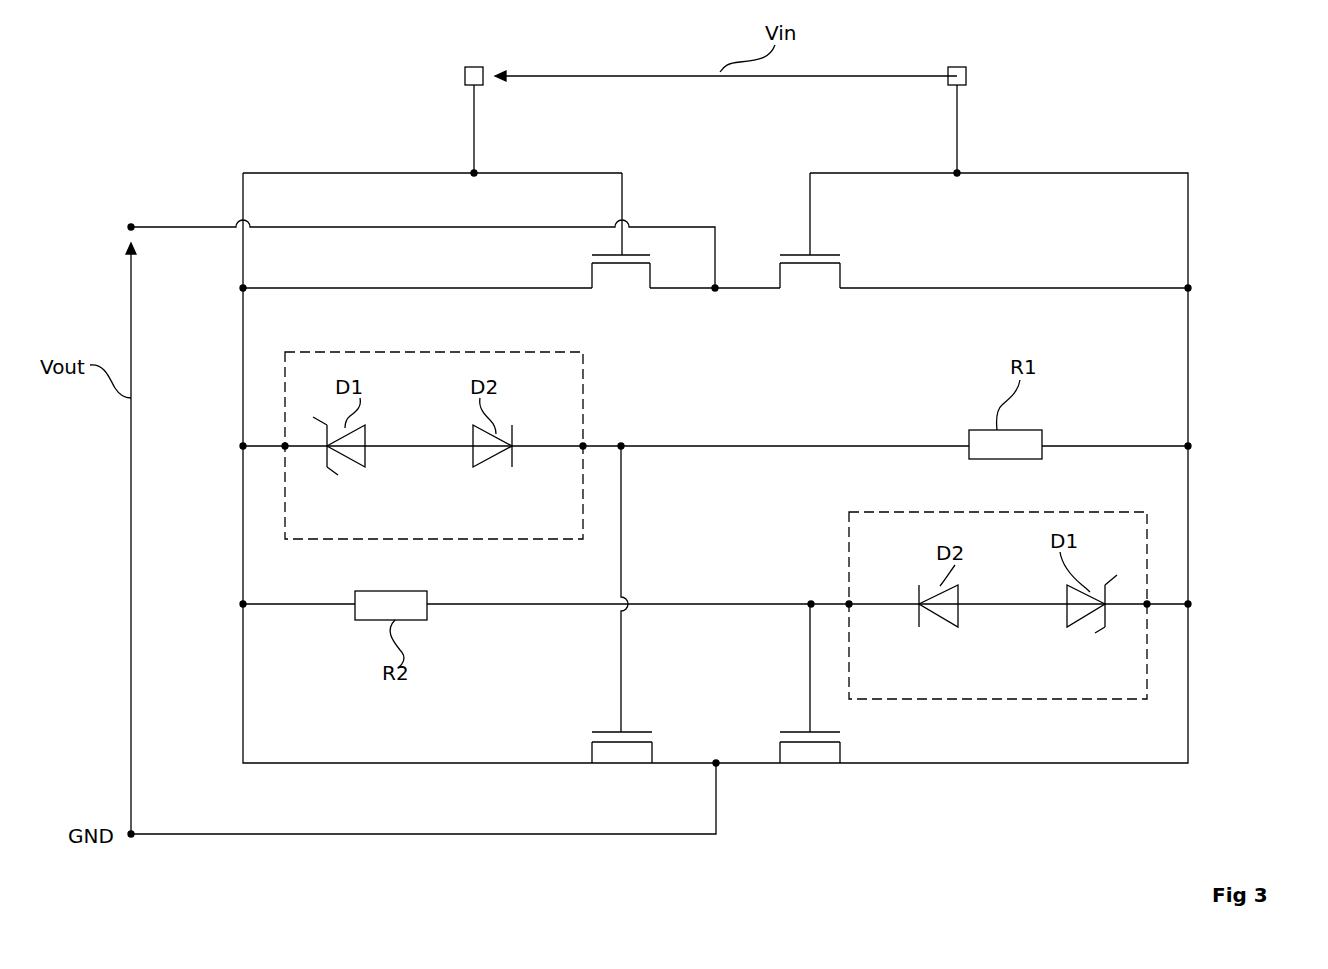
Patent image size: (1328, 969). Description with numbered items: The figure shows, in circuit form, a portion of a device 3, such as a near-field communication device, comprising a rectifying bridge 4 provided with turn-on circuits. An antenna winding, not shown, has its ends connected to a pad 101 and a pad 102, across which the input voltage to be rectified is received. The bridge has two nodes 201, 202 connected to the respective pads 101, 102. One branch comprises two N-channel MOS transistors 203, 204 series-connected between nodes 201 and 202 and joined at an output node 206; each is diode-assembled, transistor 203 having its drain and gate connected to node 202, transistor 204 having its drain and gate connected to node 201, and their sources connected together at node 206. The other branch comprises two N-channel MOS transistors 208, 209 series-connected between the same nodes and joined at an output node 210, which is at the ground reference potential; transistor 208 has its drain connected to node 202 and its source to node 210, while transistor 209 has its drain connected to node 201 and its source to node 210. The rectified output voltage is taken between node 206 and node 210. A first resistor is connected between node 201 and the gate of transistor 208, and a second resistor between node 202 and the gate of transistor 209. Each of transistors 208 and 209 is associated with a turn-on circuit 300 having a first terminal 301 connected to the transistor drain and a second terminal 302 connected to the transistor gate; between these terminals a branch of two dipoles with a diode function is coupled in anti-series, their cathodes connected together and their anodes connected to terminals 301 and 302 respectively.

The device 3 is at (1164, 68).
The rectifying bridge 4 is at (1213, 353).
The pad 101 is at (958, 67).
The pad 102 is at (472, 67).
The node 201 is at (960, 172).
The node 202 is at (476, 172).
The N-channel MOS transistor 203 is at (624, 282).
The N-channel MOS transistor 204 is at (810, 282).
The output node 206 is at (131, 224).
The N-channel MOS transistor 208 is at (621, 762).
The N-channel MOS transistor 209 is at (810, 762).
The output node 210 is at (133, 838).
The turn-on circuit 300 is at (585, 362).
The first terminal 301 is at (285, 446).
The second terminal 302 is at (586, 446).